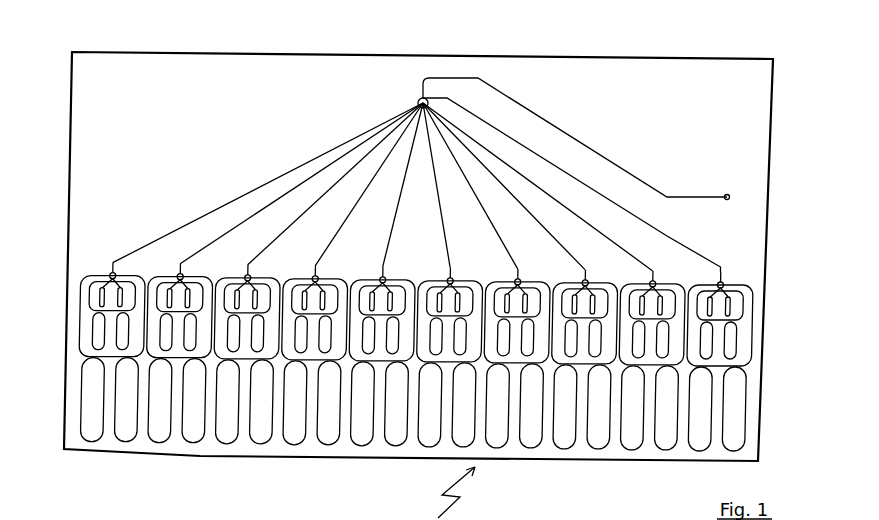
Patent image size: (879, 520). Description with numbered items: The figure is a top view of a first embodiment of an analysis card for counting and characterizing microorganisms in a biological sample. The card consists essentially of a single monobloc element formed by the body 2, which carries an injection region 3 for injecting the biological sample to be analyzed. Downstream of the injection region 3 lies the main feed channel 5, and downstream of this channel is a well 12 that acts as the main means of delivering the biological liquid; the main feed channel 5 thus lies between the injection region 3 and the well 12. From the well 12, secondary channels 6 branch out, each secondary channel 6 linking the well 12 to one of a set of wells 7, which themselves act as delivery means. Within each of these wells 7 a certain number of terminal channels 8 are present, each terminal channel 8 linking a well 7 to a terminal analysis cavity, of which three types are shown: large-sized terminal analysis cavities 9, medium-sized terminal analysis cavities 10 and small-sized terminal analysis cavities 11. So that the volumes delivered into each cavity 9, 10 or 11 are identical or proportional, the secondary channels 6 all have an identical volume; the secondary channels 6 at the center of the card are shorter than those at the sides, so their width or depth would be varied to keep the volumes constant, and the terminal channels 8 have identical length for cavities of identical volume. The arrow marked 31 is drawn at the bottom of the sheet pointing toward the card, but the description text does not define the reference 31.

The carrier substrate 2 is at (608, 80).
The terminal contact 3 is at (733, 196).
The supply conductor 5 is at (600, 152).
The lead wires 6 is at (160, 238).
The connection node 7 is at (110, 275).
The outer conductor loop 8 is at (77, 322).
The elongated conductor loop 9 is at (733, 420).
The inner conductor loop 10 is at (96, 340).
The inner slot electrode 11 is at (99, 297).
The common junction node 12 is at (417, 100).
The incident radiation 31 is at (344, 493).